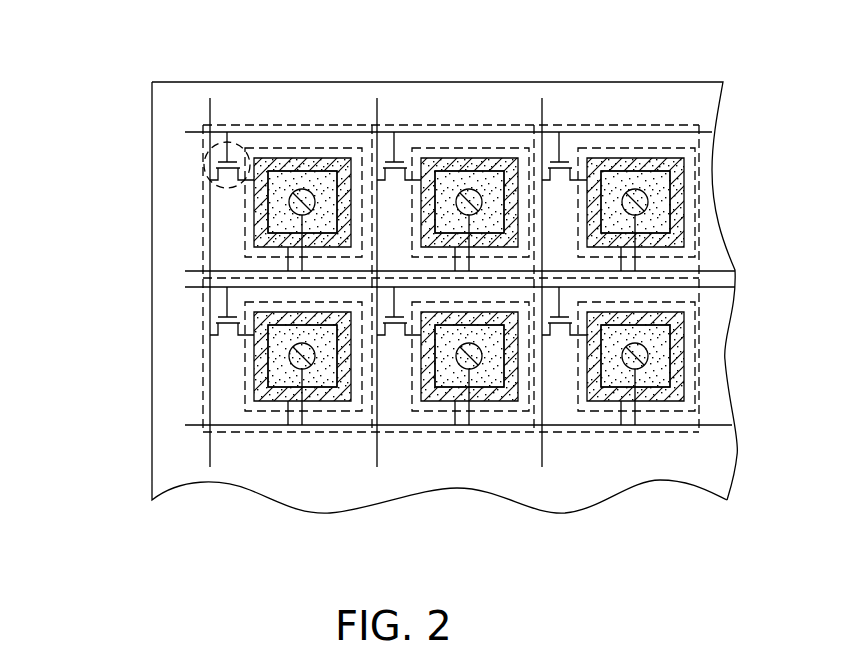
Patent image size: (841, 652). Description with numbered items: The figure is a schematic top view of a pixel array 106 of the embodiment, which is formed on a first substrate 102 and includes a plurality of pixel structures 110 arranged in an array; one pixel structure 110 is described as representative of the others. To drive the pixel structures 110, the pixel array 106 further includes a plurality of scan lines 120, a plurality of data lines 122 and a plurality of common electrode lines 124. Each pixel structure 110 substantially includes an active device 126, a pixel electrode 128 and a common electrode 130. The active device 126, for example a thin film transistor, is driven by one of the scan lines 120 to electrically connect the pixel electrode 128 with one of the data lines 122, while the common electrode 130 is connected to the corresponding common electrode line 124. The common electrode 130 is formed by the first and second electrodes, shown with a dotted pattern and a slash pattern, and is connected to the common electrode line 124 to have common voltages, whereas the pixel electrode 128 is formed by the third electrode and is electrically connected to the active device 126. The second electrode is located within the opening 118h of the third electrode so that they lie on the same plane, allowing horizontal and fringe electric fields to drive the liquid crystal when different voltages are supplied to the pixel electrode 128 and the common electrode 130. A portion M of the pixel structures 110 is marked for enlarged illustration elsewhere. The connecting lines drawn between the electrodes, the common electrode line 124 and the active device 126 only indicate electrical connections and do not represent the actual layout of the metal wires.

The first substrate 102 is at (173, 100).
The pixel array 106 is at (728, 560).
The pixel structure 110 is at (300, 123).
The scan line 120 is at (187, 132).
The data line 122 is at (210, 100).
The common electrode line 124 is at (188, 271).
The active device 126 is at (235, 142).
The portion of the pixel structures M is at (333, 146).
The common electrode 130 is at (255, 202).
The pixel electrode 128 is at (260, 227).
The opening of the third electrode 118h is at (337, 368).